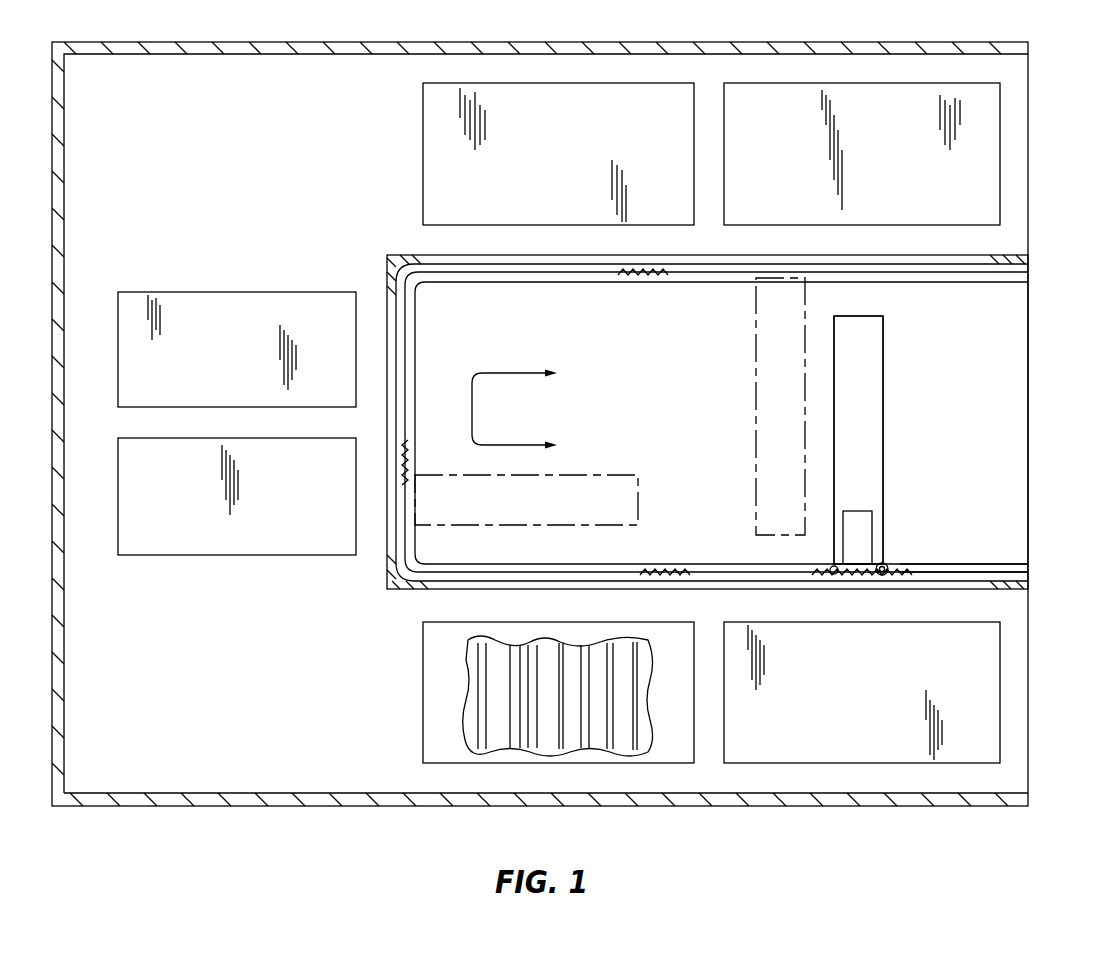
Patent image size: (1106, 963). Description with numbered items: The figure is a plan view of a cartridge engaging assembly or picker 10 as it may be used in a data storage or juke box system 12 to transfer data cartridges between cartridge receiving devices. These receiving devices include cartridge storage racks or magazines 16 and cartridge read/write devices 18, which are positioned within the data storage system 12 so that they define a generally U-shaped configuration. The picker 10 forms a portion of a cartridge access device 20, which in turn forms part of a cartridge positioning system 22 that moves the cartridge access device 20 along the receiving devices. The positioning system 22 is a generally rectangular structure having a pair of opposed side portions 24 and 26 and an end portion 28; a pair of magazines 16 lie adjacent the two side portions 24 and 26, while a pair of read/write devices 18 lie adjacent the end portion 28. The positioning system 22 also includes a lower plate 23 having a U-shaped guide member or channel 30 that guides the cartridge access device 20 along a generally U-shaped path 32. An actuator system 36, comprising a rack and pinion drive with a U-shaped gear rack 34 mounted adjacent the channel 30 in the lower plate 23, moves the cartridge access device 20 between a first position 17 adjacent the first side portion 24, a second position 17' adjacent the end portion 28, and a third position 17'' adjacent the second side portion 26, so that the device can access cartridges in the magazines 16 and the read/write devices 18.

The cartridge engaging assembly or picker 10 is at (900, 440).
The data storage system 12 is at (163, 40).
The cartridge storage racks or magazines 16 is at (680, 83).
The first position 17 is at (896, 440).
The second position 17' is at (546, 479).
The third position 17'' is at (757, 406).
The cartridge read/write devices 18 is at (150, 438).
The cartridge access device 20 is at (883, 343).
The cartridge positioning system 22 is at (1006, 559).
The lower plate 23 is at (980, 492).
The first side portion 24 is at (973, 590).
The second side portion 26 is at (975, 256).
The end portion 28 is at (383, 572).
The U-shaped guide member or channel 30 is at (415, 327).
The U-shaped path 32 is at (472, 408).
The U-shaped gear rack 34 is at (678, 571).
The actuator system 36 is at (889, 557).